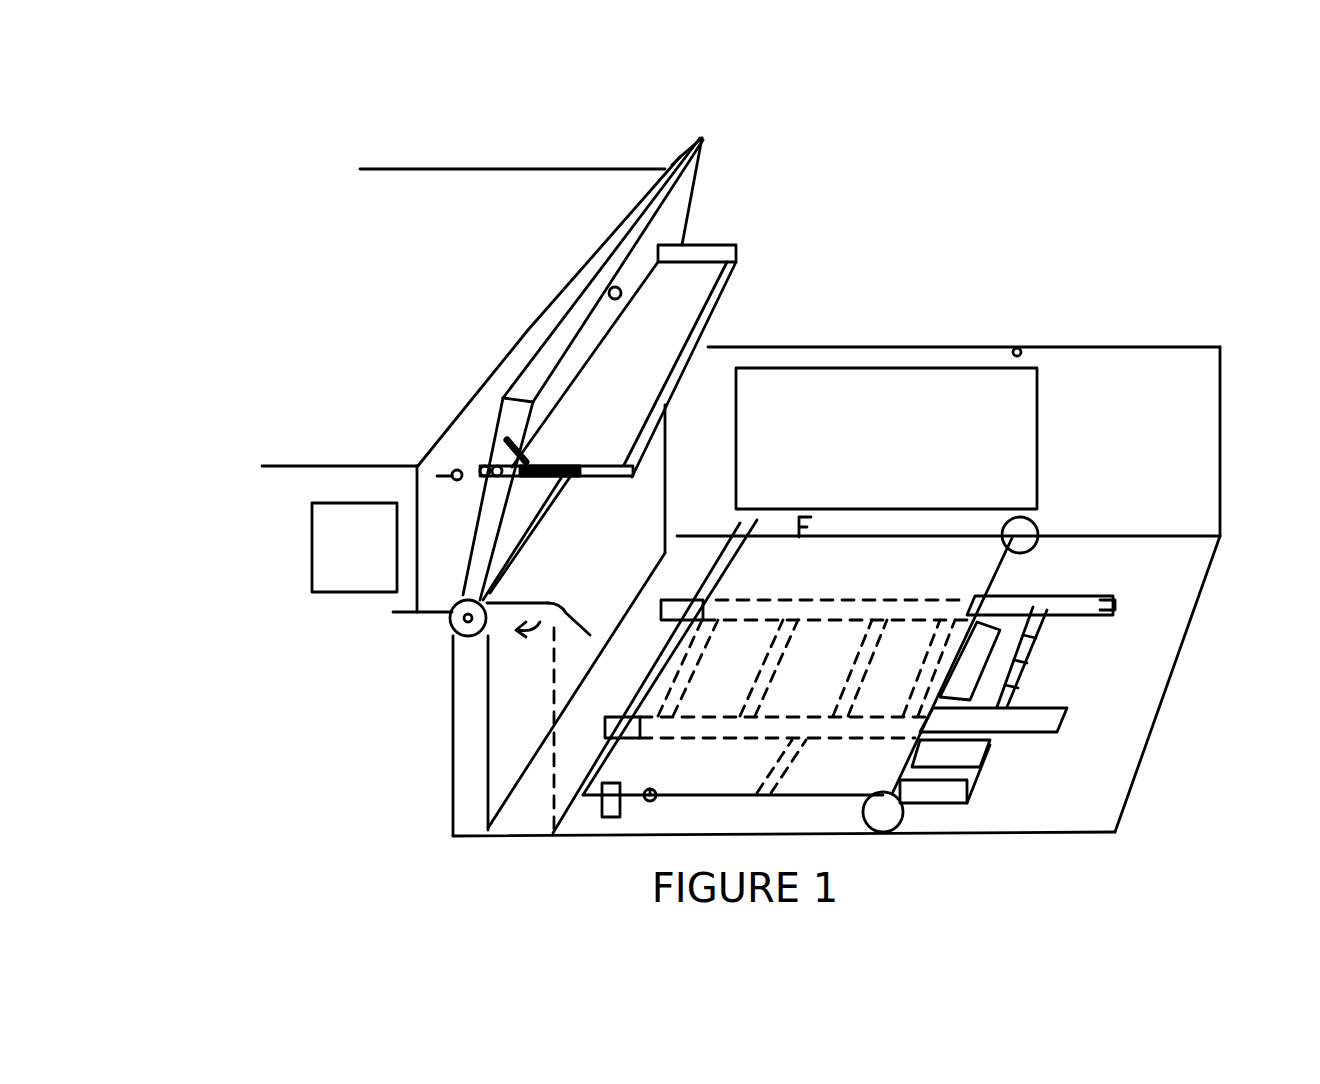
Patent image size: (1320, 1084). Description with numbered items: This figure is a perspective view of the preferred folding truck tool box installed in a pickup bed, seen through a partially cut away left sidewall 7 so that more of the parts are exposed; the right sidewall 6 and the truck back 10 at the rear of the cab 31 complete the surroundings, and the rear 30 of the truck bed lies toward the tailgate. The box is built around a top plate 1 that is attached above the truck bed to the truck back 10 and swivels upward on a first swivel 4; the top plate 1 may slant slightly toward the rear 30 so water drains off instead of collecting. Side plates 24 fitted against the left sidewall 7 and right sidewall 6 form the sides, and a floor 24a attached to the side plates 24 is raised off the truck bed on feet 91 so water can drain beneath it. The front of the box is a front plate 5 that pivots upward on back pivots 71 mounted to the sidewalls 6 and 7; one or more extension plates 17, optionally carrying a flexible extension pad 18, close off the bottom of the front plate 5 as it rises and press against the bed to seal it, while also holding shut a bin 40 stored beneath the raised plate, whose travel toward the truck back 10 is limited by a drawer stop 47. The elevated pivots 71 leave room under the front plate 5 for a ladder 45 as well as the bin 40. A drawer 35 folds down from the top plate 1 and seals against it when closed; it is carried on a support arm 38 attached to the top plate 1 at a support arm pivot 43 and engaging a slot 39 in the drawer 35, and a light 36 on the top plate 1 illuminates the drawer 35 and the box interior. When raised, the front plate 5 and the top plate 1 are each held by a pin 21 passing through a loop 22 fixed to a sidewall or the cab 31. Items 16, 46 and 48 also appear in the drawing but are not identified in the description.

The top plate 1 is at (688, 188).
The first swivel 4 is at (455, 623).
The front plate 5 is at (651, 780).
The right sidewall 6 is at (1188, 418).
The left sidewall 7 is at (514, 677).
The truck back 10 is at (557, 600).
The upper end of ramp 16 is at (678, 158).
The extension plate 17 is at (985, 660).
The flexible extension pad 18 is at (1015, 682).
The pin 21 is at (490, 470).
The loop 22 is at (455, 479).
The side plate 24 is at (1037, 386).
The floor 24a is at (742, 533).
The rear of the truck bed 30 is at (1170, 678).
The cab 31 is at (292, 775).
The drawer 35 is at (738, 255).
The light 36 is at (610, 291).
The support arm 38 is at (527, 441).
The slot 39 is at (596, 486).
The bin 40 is at (983, 792).
The support arm pivot 43 is at (507, 440).
The ladder 45 is at (1090, 596).
The slat 46 is at (718, 660).
The drawer stop 47 is at (765, 795).
The rail 48 is at (1117, 600).
The back pivot 71 is at (1025, 540).
The foot 91 is at (608, 814).